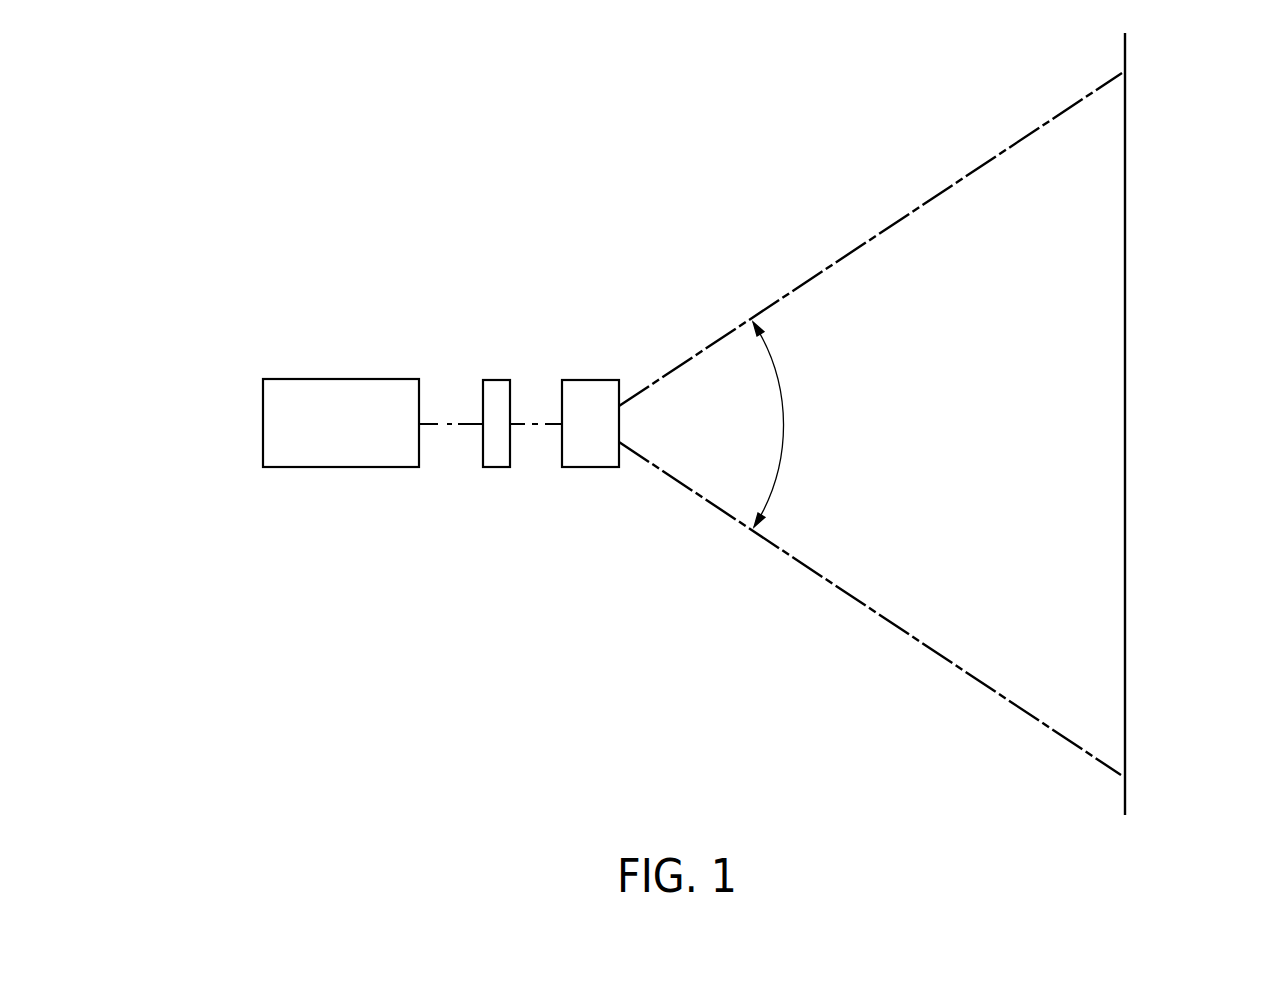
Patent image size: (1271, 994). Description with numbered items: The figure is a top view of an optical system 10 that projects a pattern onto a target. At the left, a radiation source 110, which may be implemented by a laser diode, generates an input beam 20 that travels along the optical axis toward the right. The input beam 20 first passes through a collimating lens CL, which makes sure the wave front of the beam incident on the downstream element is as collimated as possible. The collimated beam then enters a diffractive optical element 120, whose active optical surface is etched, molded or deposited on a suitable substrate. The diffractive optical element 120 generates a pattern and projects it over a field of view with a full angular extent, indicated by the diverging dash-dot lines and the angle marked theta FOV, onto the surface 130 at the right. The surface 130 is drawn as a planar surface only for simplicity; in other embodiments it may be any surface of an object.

The optical system 10 is at (226, 215).
The radiation source 110 is at (357, 378).
The collimating lens CL is at (496, 379).
The diffractive optical element 120 is at (592, 379).
The input beam 20 is at (436, 425).
The surface 130 is at (1125, 313).